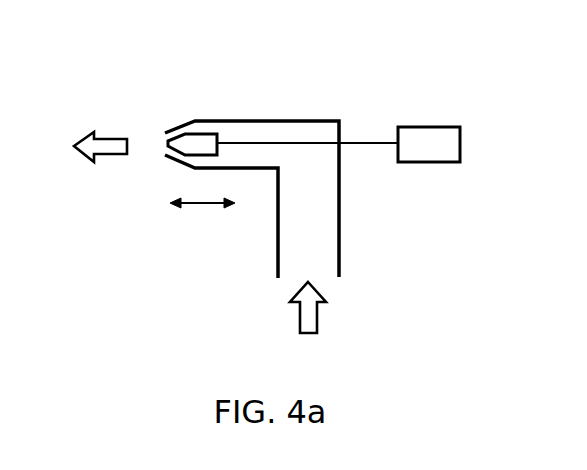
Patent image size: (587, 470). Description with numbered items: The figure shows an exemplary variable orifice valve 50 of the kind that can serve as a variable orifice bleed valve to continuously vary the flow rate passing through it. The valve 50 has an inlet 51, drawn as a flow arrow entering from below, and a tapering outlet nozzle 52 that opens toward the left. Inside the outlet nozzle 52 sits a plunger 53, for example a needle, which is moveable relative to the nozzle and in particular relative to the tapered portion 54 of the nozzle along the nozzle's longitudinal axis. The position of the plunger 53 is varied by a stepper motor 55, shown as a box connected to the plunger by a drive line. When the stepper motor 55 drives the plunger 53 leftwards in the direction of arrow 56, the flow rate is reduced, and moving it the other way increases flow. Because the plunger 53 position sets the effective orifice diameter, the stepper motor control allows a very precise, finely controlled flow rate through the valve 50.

The variable orifice valve 50 is at (121, 81).
The inlet 51 is at (317, 317).
The tapering outlet nozzle 52 is at (178, 162).
The plunger 53 is at (203, 142).
The tapered portion 54 is at (187, 123).
The stepper motor 55 is at (428, 125).
The arrow 56 is at (203, 204).